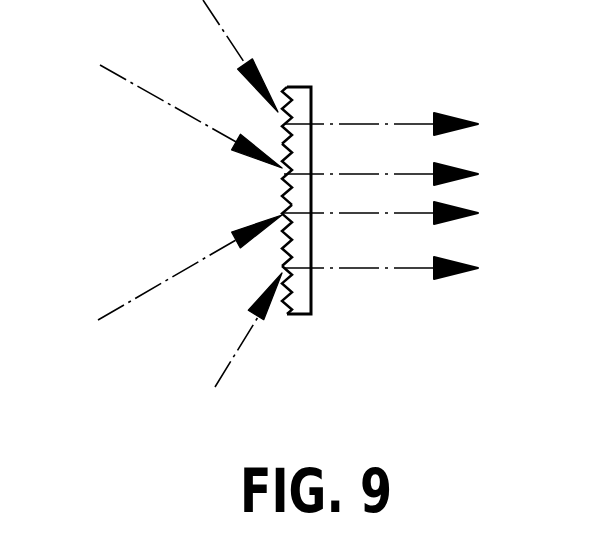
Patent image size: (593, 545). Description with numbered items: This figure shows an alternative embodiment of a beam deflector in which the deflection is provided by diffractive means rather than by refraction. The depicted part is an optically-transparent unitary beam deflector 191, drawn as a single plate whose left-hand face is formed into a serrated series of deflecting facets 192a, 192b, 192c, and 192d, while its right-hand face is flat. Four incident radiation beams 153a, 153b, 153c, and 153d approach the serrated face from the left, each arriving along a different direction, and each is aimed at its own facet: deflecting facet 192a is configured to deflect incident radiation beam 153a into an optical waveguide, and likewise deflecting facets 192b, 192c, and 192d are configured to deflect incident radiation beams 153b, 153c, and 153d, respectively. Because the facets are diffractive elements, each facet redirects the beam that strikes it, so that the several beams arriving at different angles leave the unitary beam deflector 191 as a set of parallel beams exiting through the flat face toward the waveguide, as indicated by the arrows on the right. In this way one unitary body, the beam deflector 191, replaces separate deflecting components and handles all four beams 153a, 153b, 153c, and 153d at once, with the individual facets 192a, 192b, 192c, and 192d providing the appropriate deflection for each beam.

The incident radiation beam 153a is at (214, 14).
The incident radiation beam 153b is at (124, 80).
The incident radiation beam 153c is at (164, 281).
The incident radiation beam 153d is at (235, 356).
The unitary beam deflector 191 is at (311, 314).
The deflecting facet 192a is at (282, 86).
The deflecting facet 192b is at (284, 184).
The deflecting facet 192c is at (288, 235).
The deflecting facet 192d is at (284, 306).